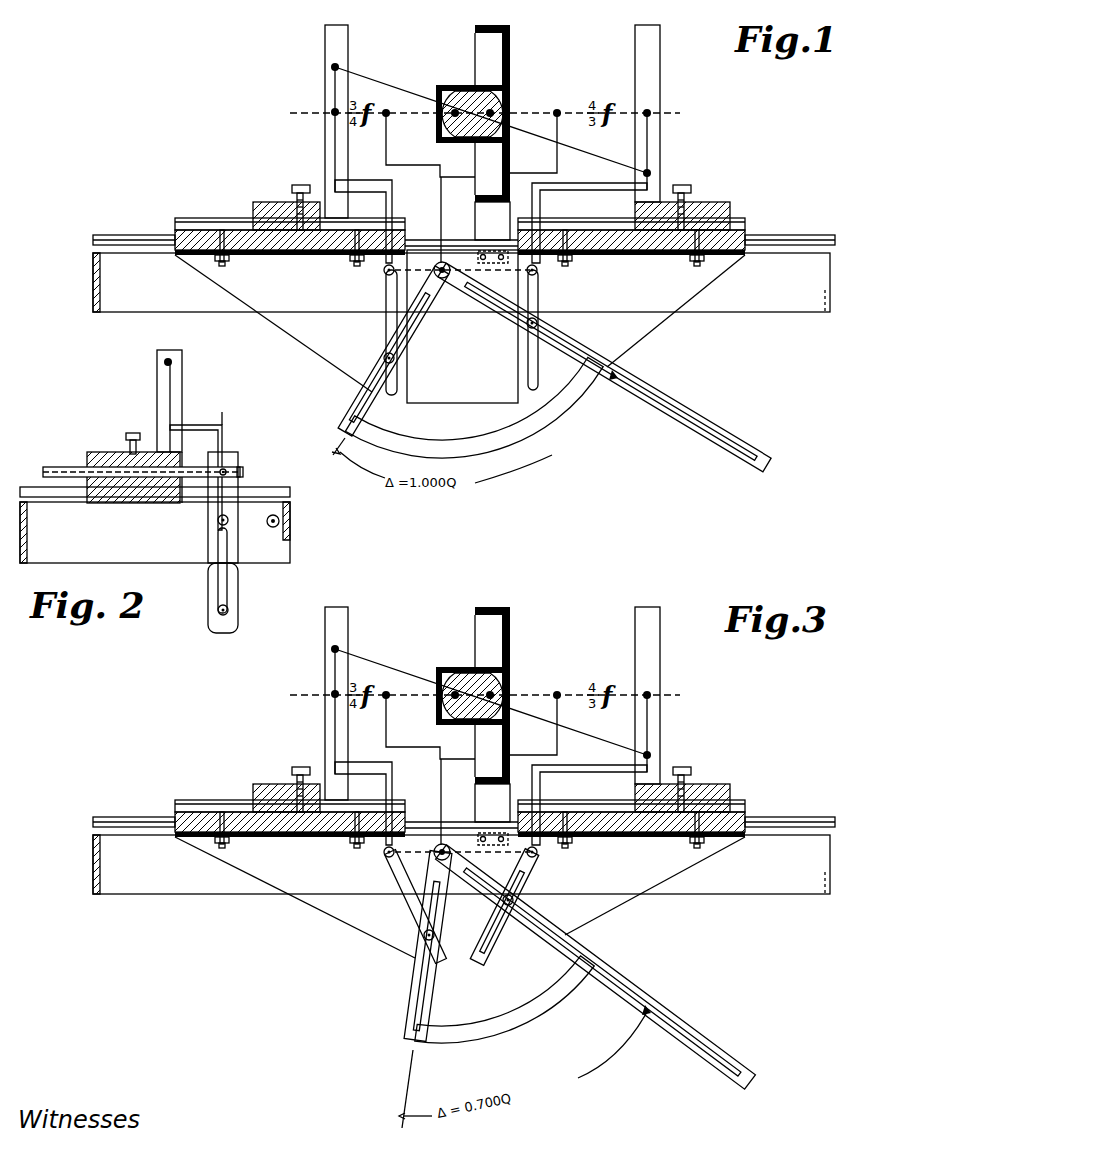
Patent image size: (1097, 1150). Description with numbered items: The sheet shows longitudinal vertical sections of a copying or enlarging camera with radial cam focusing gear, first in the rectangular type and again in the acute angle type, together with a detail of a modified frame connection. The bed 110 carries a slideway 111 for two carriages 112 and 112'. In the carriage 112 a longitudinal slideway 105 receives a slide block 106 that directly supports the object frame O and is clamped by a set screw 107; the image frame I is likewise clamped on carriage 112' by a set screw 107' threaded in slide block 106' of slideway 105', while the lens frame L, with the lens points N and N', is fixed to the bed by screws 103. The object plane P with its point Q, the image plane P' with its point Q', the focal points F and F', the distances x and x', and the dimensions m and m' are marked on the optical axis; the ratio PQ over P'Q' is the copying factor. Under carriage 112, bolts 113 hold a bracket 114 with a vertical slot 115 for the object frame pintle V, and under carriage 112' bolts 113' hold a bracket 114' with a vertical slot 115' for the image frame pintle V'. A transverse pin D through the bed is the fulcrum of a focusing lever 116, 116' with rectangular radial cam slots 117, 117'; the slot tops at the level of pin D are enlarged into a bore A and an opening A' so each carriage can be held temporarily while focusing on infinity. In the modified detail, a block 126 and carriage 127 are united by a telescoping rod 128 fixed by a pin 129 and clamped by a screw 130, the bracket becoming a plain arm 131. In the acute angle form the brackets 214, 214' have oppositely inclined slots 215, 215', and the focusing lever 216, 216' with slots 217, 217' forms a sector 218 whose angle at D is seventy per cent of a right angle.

In FIG. 1, the object frame O is at (340, 42).
In FIG. 3, the object frame O is at (356, 690).
In FIG. 1, the image frame I is at (655, 43).
In FIG. 3, the image frame I is at (664, 682).
In FIG. 1, the lens frame L is at (500, 45).
In FIG. 3, the lens frame L is at (510, 682).
In FIG. 1, the lens nodal point N is at (471, 95).
In FIG. 3, the lens nodal point N is at (471, 677).
In FIG. 1, the second lens nodal point N' is at (518, 82).
In FIG. 3, the second lens nodal point N' is at (518, 664).
In FIG. 1, the object point Q is at (309, 66).
In FIG. 3, the object point Q is at (309, 648).
In FIG. 1, the object plane P is at (309, 113).
In FIG. 2, the object plane P is at (144, 425).
In FIG. 3, the object plane P is at (309, 695).
In FIG. 1, the front focal point F is at (396, 91).
In FIG. 3, the front focal point F is at (396, 673).
In FIG. 1, the rear focal point F' is at (571, 89).
In FIG. 3, the rear focal point F' is at (571, 671).
In FIG. 1, the image plane P' is at (675, 103).
In FIG. 3, the image plane P' is at (675, 685).
In FIG. 1, the image point Q' is at (675, 161).
In FIG. 3, the image point Q' is at (675, 743).
In FIG. 1, the object-side distance x is at (430, 188).
In FIG. 3, the object-side distance x is at (430, 770).
In FIG. 1, the image-side distance x' is at (533, 143).
In FIG. 3, the image-side distance x' is at (533, 725).
In FIG. 1, the object-side dimension m is at (363, 208).
In FIG. 2, the object-side dimension m is at (196, 461).
In FIG. 3, the object-side dimension m is at (363, 790).
In FIG. 1, the image-side dimension m' is at (589, 210).
In FIG. 3, the image-side dimension m' is at (589, 792).
In FIG. 1, the transverse pin D is at (437, 264).
In FIG. 2, the transverse pin D is at (280, 520).
In FIG. 3, the transverse pin D is at (424, 809).
In FIG. 1, the bore A is at (363, 284).
In FIG. 2, the bore A is at (183, 523).
In FIG. 3, the bore A is at (363, 866).
In FIG. 1, the opening A' is at (554, 280).
In FIG. 3, the opening A' is at (554, 862).
In FIG. 1, the object frame pintle V is at (366, 349).
In FIG. 2, the object frame pintle V is at (194, 625).
In FIG. 3, the object frame pintle V is at (404, 922).
In FIG. 1, the image frame pintle V' is at (562, 312).
In FIG. 3, the image frame pintle V' is at (534, 893).
In FIG. 1, the screws 103 is at (500, 252).
In FIG. 3, the screws 103 is at (492, 814).
In FIG. 1, the longitudinal slideway 105 is at (290, 205).
In FIG. 3, the longitudinal slideway 105 is at (290, 787).
In FIG. 1, the longitudinal slideway 105' is at (659, 211).
In FIG. 3, the longitudinal slideway 105' is at (659, 793).
In FIG. 1, the slide block 106 is at (276, 197).
In FIG. 3, the slide block 106 is at (276, 779).
In FIG. 1, the slide block 106' is at (706, 201).
In FIG. 3, the slide block 106' is at (706, 783).
In FIG. 1, the set screw 107 is at (297, 195).
In FIG. 3, the set screw 107 is at (297, 777).
In FIG. 1, the set screw 107' is at (704, 197).
In FIG. 3, the set screw 107' is at (704, 779).
In FIG. 1, the bed 110 is at (97, 272).
In FIG. 2, the bed 110 is at (278, 538).
In FIG. 3, the bed 110 is at (427, 864).
In FIG. 1, the slideway 111 is at (150, 240).
In FIG. 2, the slideway 111 is at (45, 490).
In FIG. 3, the slideway 111 is at (134, 811).
In FIG. 1, the carriage 112 is at (272, 216).
In FIG. 3, the carriage 112 is at (272, 798).
In FIG. 1, the carriage 112' is at (674, 231).
In FIG. 3, the carriage 112' is at (674, 813).
In FIG. 1, the bolts 113 is at (258, 266).
In FIG. 3, the bolts 113 is at (258, 848).
In FIG. 1, the bolts 113' is at (657, 266).
In FIG. 3, the bolts 113' is at (657, 848).
In FIG. 1, the bracket 114 is at (273, 323).
In FIG. 1, the bracket 114' is at (676, 311).
In FIG. 1, the vertical slot 115 is at (351, 332).
In FIG. 1, the vertical slot 115' is at (506, 340).
In FIG. 1, the focusing lever arm 116 is at (370, 351).
In FIG. 1, the focusing lever arm 116' is at (604, 367).
In FIG. 1, the radial cam slot 117 is at (361, 361).
In FIG. 1, the radial cam slot 117' is at (621, 371).
In FIG. 2, the block 126 is at (98, 452).
In FIG. 2, the carriage 127 is at (243, 472).
In FIG. 2, the telescoping rod 128 is at (192, 467).
In FIG. 2, the pin 129 is at (225, 470).
In FIG. 2, the screw 130 is at (135, 426).
In FIG. 2, the plain arm 131 is at (233, 583).
In FIG. 3, the bracket 214 is at (295, 897).
In FIG. 3, the bracket 214' is at (655, 886).
In FIG. 3, the inclined slot 215 is at (389, 907).
In FIG. 3, the inclined slot 215' is at (504, 924).
In FIG. 3, the focusing lever arm 216 is at (412, 946).
In FIG. 3, the focusing lever arm 216' is at (596, 967).
In FIG. 3, the radial cam slot 217 is at (441, 955).
In FIG. 3, the radial cam slot 217' is at (613, 972).
In FIG. 3, the sector 218 is at (512, 1022).